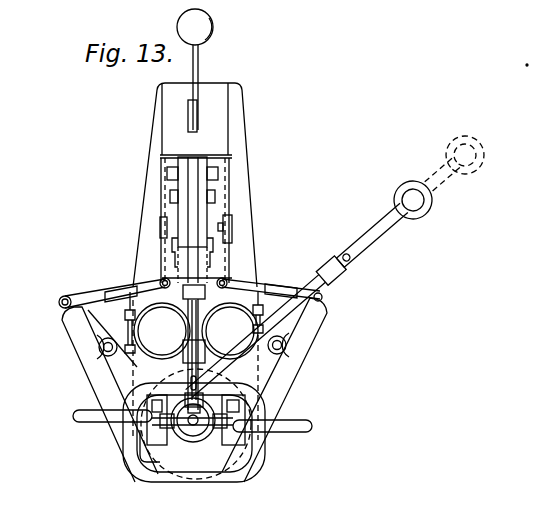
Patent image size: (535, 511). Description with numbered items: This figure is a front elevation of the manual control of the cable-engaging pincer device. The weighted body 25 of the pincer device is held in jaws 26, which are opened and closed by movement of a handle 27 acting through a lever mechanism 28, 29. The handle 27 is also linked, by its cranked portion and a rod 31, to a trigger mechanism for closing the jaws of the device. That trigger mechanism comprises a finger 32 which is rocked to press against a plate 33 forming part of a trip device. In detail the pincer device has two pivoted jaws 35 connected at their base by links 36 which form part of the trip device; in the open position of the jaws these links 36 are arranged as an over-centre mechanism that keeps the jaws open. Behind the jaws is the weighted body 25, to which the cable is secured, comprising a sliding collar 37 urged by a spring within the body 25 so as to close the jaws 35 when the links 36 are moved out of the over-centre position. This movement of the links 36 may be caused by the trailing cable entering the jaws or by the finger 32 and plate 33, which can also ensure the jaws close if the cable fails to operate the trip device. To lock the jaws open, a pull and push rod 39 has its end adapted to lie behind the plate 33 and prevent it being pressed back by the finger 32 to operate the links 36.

The handle 27 is at (200, 67).
The lever mechanism 28 is at (167, 208).
The lever mechanism 29 is at (115, 290).
The pull and push rod 39 is at (362, 258).
The rod 31 is at (207, 313).
The finger 32 is at (190, 402).
The jaws 26 is at (90, 375).
The weighted body 25 is at (200, 481).
The links 36 is at (170, 437).
The pivoted jaws 35 is at (100, 419).
The sliding collar 37 is at (143, 448).
The plate 33 is at (192, 420).